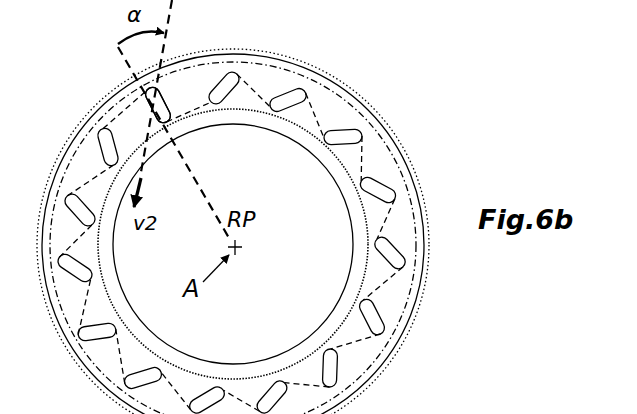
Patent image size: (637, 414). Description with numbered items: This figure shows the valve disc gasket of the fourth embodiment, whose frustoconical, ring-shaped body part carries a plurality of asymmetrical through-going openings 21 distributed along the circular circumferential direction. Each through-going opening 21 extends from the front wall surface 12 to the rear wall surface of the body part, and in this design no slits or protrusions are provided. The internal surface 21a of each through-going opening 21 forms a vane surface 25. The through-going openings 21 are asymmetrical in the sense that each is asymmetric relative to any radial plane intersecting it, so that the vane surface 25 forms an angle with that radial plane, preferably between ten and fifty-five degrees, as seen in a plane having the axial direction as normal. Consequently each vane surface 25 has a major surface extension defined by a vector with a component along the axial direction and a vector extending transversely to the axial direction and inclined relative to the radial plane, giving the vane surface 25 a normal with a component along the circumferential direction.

The front wall surface 12 is at (271, 220).
The asymmetrical through-going opening 21 is at (290, 98).
The internal surface 21a is at (154, 99).
The vane surface 25 is at (158, 105).